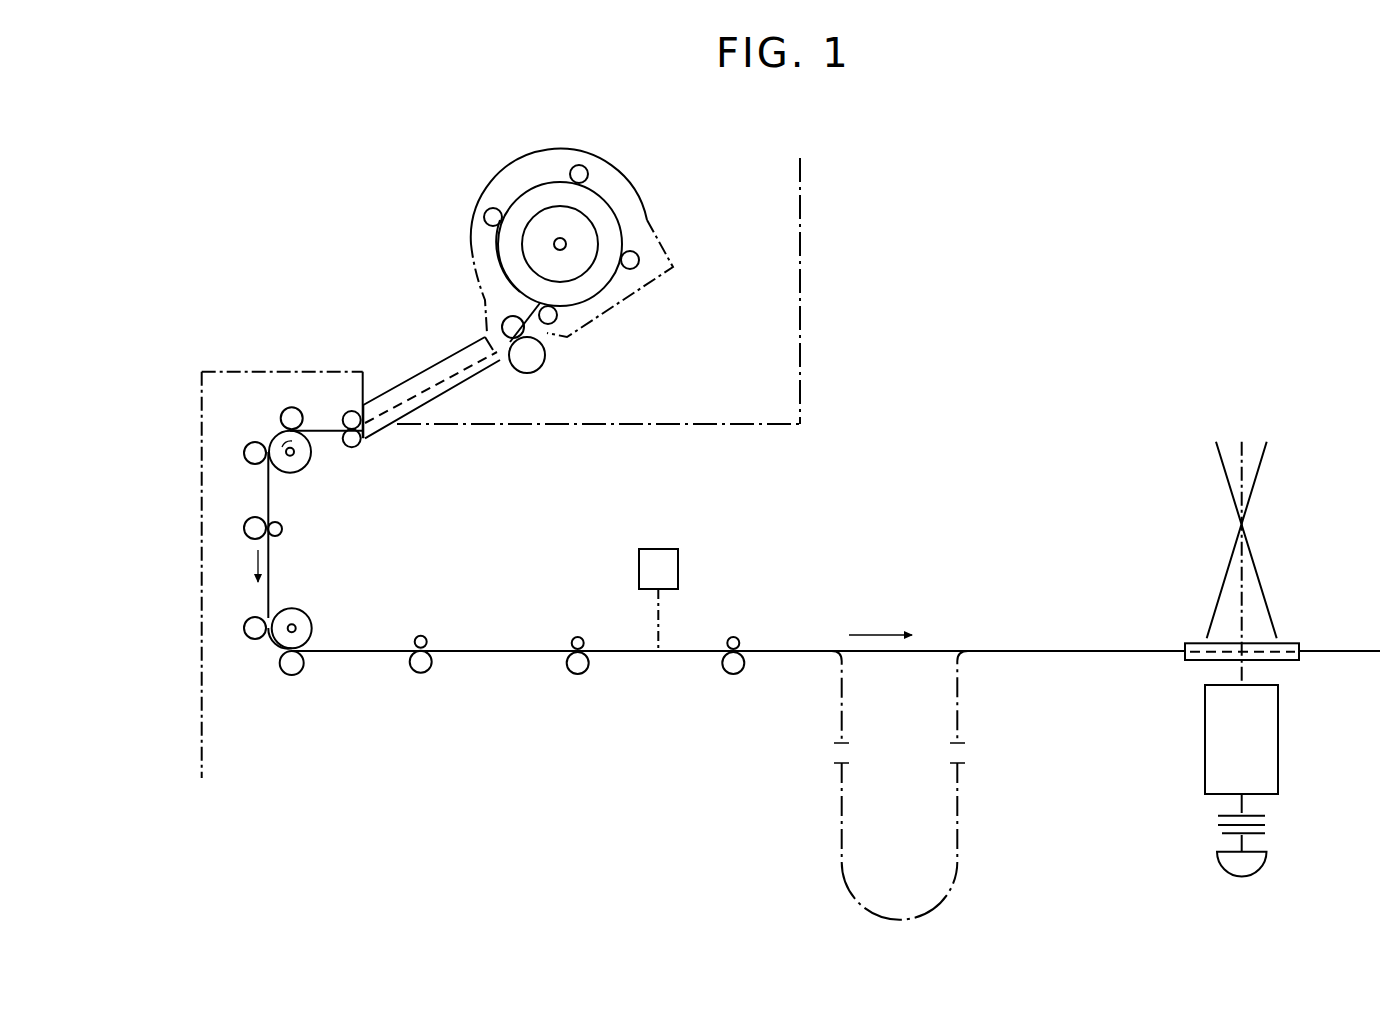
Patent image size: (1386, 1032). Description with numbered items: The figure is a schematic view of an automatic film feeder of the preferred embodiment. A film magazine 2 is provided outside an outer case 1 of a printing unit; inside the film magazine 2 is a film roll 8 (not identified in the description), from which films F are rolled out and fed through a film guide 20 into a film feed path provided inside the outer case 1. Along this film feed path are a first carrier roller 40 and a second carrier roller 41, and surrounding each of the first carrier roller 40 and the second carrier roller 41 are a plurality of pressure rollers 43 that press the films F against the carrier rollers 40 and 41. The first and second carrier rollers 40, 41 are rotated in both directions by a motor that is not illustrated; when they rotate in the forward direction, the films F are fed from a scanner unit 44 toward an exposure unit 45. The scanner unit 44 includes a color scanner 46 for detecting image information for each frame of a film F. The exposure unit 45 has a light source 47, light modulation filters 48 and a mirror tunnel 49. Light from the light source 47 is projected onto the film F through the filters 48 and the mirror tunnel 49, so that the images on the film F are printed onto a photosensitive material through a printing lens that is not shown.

The outer case 1 is at (200, 371).
The film magazine 2 is at (631, 184).
The film roll 8 is at (597, 230).
The film F is at (502, 243).
The film guide 20 is at (415, 361).
The pressure rollers 43 is at (287, 414).
The first carrier roller 40 is at (303, 462).
The second carrier roller 41 is at (305, 618).
The scanner unit 44 is at (636, 630).
The color scanner 46 is at (662, 560).
The exposure unit 45 is at (1204, 604).
The mirror tunnel 49 is at (1218, 737).
The light modulation filters 48 is at (1220, 833).
The light source 47 is at (1232, 867).